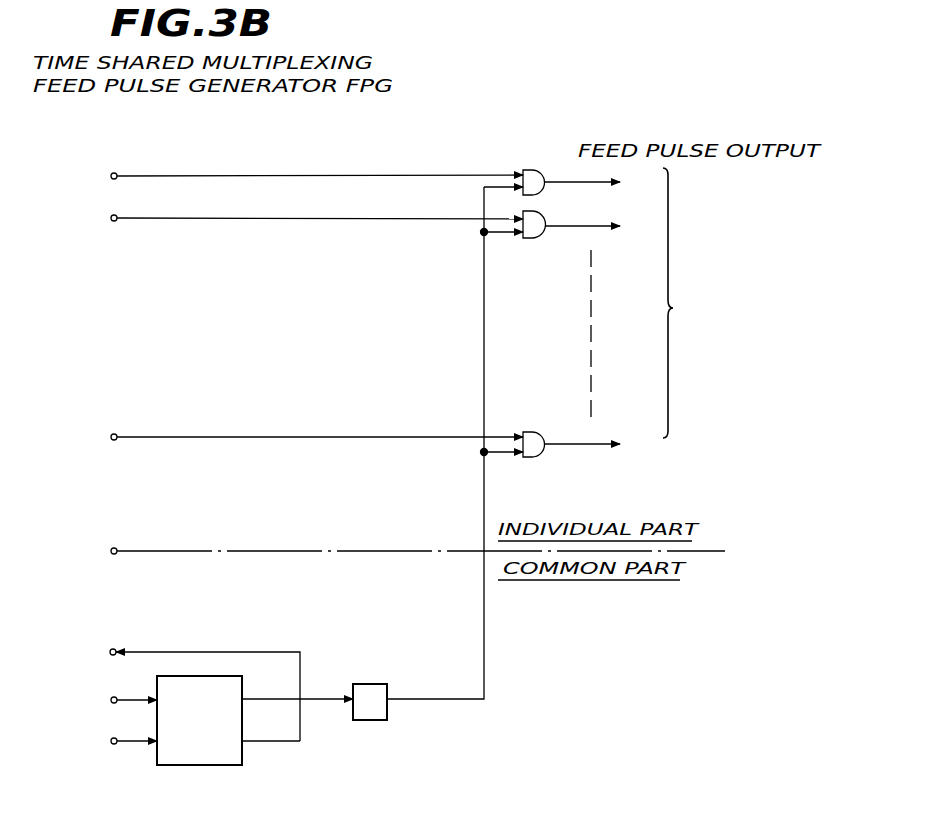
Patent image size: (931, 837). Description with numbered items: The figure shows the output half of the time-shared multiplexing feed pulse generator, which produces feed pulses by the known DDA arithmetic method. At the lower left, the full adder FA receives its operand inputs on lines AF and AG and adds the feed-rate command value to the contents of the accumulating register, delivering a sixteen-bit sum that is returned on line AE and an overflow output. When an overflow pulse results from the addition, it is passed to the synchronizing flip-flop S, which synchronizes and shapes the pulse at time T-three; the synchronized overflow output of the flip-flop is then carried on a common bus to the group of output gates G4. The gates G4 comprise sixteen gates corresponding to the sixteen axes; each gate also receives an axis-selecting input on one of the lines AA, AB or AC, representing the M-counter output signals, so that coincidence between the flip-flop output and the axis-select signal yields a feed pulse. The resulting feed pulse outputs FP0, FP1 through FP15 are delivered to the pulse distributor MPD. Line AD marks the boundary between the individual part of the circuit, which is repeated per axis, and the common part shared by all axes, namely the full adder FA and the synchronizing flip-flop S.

The input line AA is at (300, 176).
The input line AB is at (300, 218).
The input line AC is at (300, 437).
The input line AD is at (401, 551).
The output line AE is at (188, 691).
The input line AF is at (117, 699).
The input line AG is at (117, 741).
The group of output gates G4 is at (518, 298).
The feed pulse output FP0 is at (582, 172).
The feed pulse output FP1 is at (582, 218).
The feed pulse output FP15 is at (582, 432).
The pulse distributor MPD is at (745, 303).
The full adder FA is at (200, 759).
The synchronizing flip-flop S is at (358, 716).